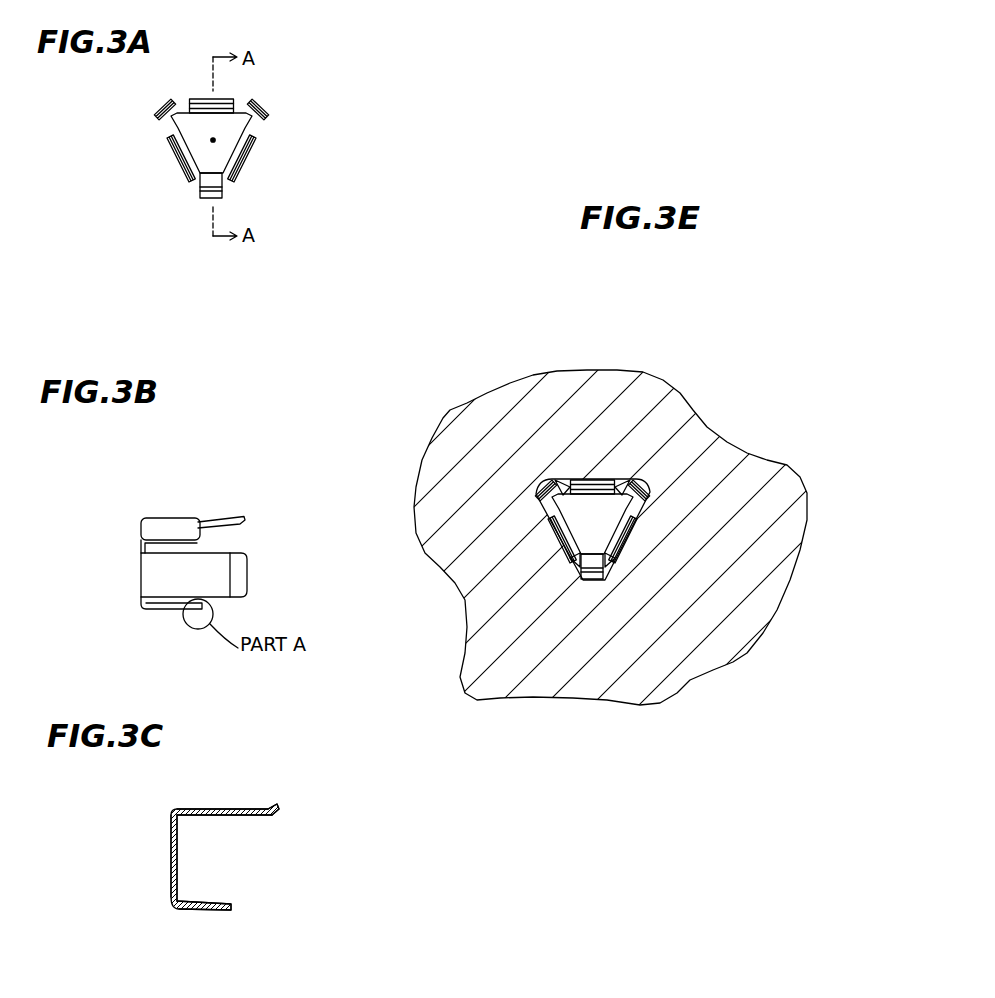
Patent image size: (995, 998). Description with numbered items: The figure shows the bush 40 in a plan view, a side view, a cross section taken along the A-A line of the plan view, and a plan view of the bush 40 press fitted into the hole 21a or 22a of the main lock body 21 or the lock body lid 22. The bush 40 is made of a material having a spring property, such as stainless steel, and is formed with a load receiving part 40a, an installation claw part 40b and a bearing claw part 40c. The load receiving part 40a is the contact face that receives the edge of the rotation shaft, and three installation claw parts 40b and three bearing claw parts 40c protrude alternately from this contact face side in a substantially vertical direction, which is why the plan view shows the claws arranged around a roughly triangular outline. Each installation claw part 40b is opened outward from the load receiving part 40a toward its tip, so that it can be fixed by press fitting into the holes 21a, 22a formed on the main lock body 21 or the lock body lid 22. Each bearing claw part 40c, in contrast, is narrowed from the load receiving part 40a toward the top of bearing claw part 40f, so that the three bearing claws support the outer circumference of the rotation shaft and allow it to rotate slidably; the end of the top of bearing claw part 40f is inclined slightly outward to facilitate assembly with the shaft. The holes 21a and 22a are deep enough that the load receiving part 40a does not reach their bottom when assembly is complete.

In FIG. 3A, the bush 40 is at (314, 176).
In FIG. 3A, the load receiving part 40a is at (212, 143).
In FIG. 3C, the load receiving part 40a is at (178, 874).
In FIG. 3A, the installation claw part 40b is at (253, 124).
In FIG. 3B, the installation claw part 40b is at (157, 646).
In FIG. 3C, the installation claw part 40b is at (207, 910).
In FIG. 3E, the installation claw part 40b is at (622, 569).
In FIG. 3A, the bearing claw part 40c is at (250, 155).
In FIG. 3B, the bearing claw part 40c is at (220, 514).
In FIG. 3C, the bearing claw part 40c is at (210, 810).
In FIG. 3E, the bearing claw part 40c is at (564, 565).
In FIG. 3B, the top of bearing claw part 40f is at (240, 578).
In FIG. 3C, the top of bearing claw part 40f is at (270, 813).
In FIG. 3E, the main lock body 21 is at (574, 506).
In FIG. 3E, the lock body lid 22 is at (658, 392).
In FIG. 3E, the hole 21a is at (689, 632).
In FIG. 3E, the hole 22a is at (644, 506).